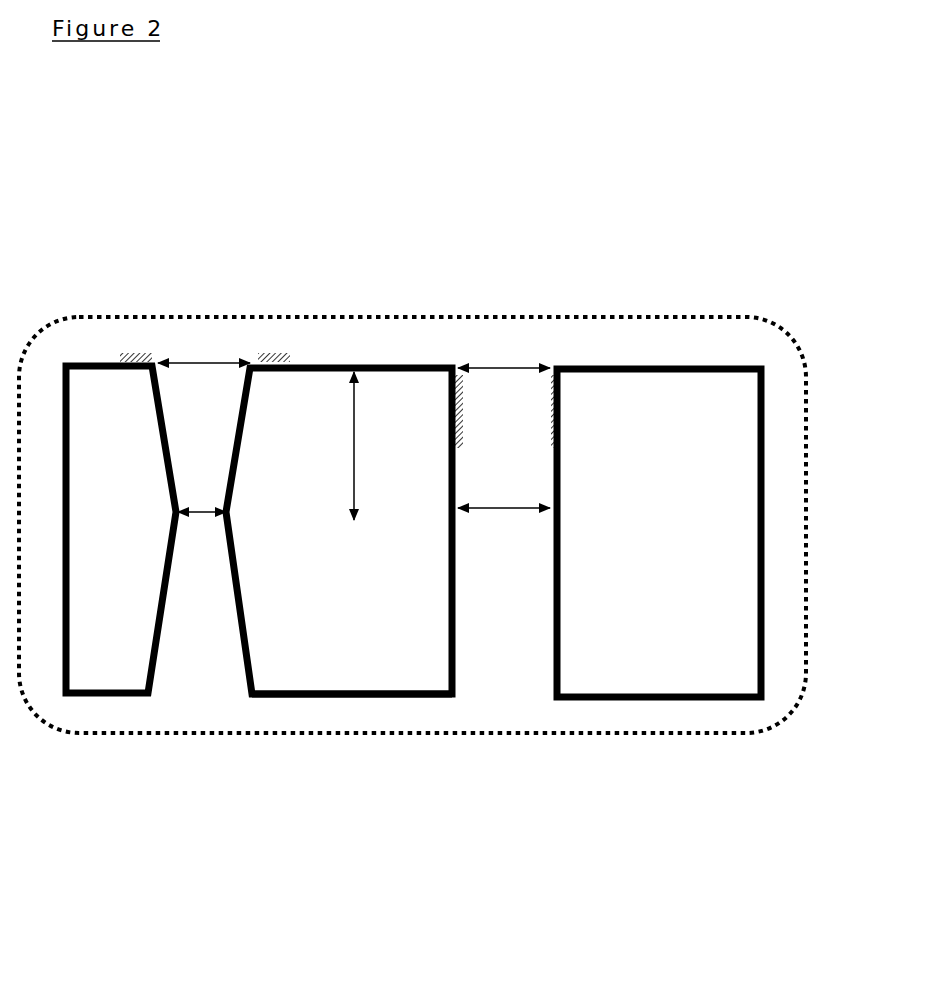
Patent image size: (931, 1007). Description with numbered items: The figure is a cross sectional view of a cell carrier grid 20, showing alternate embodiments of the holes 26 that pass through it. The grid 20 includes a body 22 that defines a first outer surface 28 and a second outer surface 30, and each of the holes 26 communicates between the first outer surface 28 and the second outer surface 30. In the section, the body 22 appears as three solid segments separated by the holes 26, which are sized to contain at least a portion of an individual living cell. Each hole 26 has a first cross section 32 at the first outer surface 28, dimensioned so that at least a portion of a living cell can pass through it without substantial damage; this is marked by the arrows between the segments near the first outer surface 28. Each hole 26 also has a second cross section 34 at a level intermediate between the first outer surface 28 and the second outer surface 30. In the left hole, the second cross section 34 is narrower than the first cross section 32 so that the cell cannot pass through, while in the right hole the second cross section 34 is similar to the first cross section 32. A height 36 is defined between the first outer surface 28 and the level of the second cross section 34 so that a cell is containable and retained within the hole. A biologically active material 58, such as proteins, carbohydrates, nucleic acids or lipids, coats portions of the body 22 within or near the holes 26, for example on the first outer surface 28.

The cell carrier grid 20 is at (298, 41).
The body 22 is at (292, 311).
The holes 26 is at (224, 684).
The first outer surface 28 is at (92, 360).
The second outer surface 30 is at (340, 700).
The first cross section 32 is at (202, 362).
The second cross section 34 is at (201, 516).
The height 36 is at (354, 487).
The biologically active material 58 is at (136, 353).